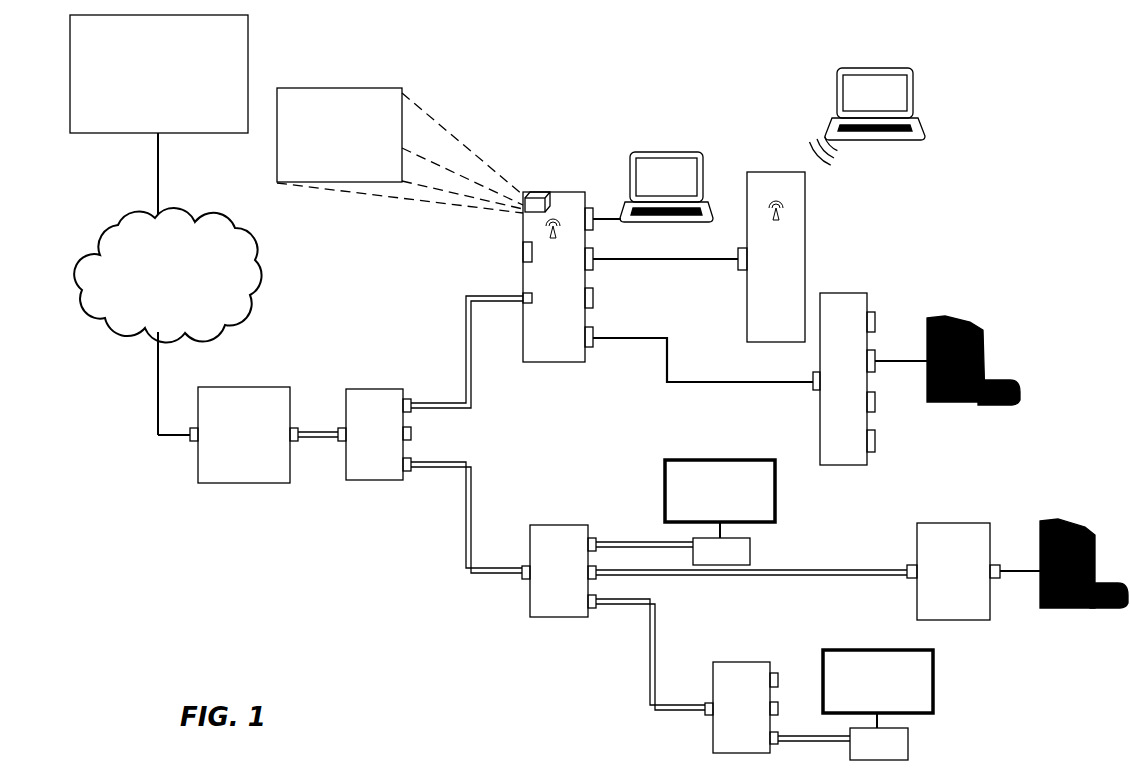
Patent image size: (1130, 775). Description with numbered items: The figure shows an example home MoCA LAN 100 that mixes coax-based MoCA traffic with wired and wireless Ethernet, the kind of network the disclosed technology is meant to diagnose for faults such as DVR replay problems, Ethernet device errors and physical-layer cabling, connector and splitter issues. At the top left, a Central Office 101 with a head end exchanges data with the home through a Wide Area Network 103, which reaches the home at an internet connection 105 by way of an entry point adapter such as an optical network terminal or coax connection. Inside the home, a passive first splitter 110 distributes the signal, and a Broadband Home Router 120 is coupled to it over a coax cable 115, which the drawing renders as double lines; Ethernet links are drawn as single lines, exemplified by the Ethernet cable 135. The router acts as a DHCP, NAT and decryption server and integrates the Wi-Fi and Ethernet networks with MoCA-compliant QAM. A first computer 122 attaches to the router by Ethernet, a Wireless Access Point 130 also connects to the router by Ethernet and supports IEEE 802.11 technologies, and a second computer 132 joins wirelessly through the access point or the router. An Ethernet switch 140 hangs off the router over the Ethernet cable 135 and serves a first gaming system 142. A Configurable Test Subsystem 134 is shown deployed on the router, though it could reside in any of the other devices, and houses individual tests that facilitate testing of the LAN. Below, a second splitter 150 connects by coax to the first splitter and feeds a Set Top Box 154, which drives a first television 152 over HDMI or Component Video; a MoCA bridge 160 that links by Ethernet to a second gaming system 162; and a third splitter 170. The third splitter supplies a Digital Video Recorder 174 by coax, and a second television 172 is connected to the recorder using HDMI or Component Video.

The home MoCA LAN 100 is at (1098, 43).
The Central Office 101 is at (159, 74).
The Wide Area Network (WAN) 103 is at (167, 275).
The internet connection 105 is at (244, 435).
The first splitter 110 is at (374, 434).
The coax cable 115 is at (468, 345).
The Broadband Home Router (BHR) 120 is at (558, 277).
The first computer 122 is at (680, 151).
The Wireless Access Point (WAP) 130 is at (771, 257).
The second computer 132 is at (878, 67).
The Configurable Test Subsystem 134 is at (400, 150).
The Ethernet cable 135 is at (757, 381).
The Ethernet switch 140 is at (844, 379).
The first gaming system 142 is at (947, 318).
The second splitter 150 is at (559, 571).
The first television 152 is at (738, 459).
The Set Top Box (STB) 154 is at (750, 547).
The MoCA bridge 160 is at (953, 571).
The second gaming system 162 is at (1057, 520).
The third splitter 170 is at (741, 707).
The second television 172 is at (898, 647).
The Digital Video Recorder (DVR) 174 is at (908, 741).